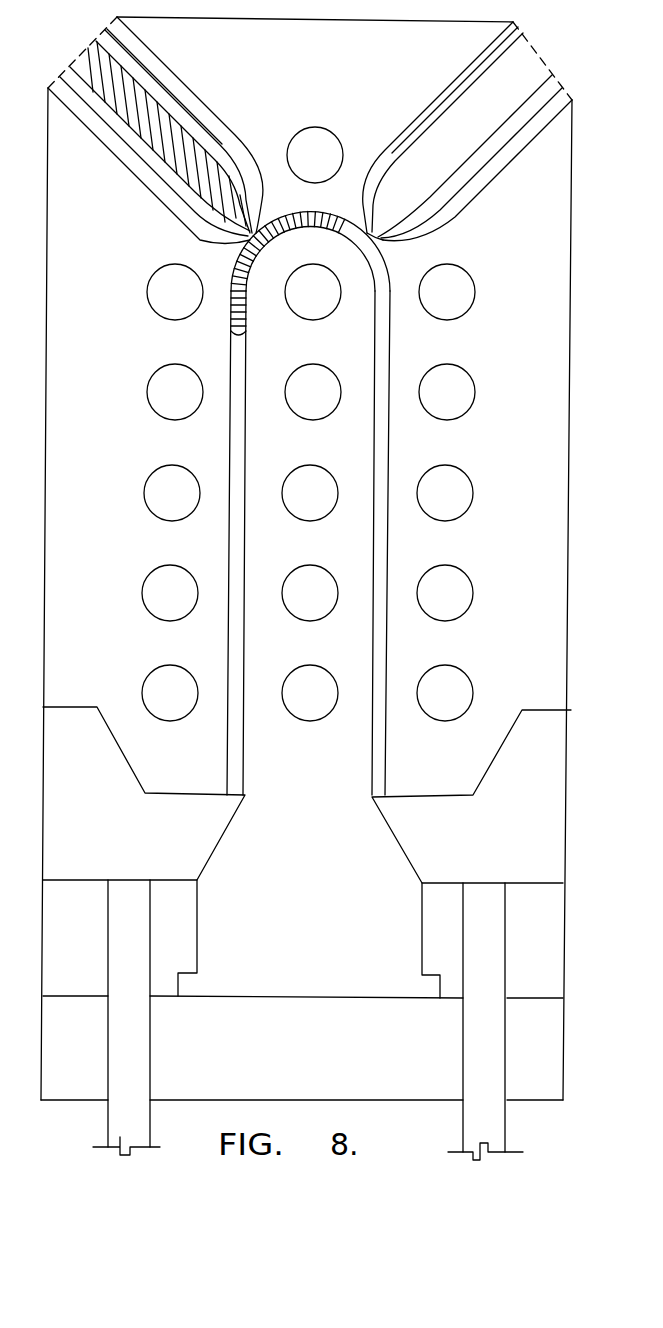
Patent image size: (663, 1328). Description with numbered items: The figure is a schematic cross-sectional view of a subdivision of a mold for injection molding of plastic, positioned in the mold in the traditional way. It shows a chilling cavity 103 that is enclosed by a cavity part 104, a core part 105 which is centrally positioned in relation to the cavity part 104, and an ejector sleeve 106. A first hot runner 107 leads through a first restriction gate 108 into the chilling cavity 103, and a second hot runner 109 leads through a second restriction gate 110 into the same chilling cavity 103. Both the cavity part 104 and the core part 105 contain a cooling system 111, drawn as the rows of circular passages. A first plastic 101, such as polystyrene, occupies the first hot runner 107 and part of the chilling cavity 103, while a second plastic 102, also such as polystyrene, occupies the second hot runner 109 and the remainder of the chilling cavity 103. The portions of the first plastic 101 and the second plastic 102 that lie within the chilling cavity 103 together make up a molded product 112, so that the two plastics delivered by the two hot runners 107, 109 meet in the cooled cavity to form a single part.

The first plastic 101 is at (250, 238).
The second plastic 102 is at (383, 285).
The chilling cavity 103 is at (390, 339).
The cavity part 104 is at (306, 558).
The core part 105 is at (312, 424).
The ejector sleeve 106 is at (306, 933).
The first hot runner 107 is at (165, 110).
The first restriction gate 108 is at (260, 227).
The second hot runner 109 is at (465, 110).
The second restriction gate 110 is at (402, 248).
The cooling system 111 is at (447, 593).
The molded product 112 is at (378, 443).